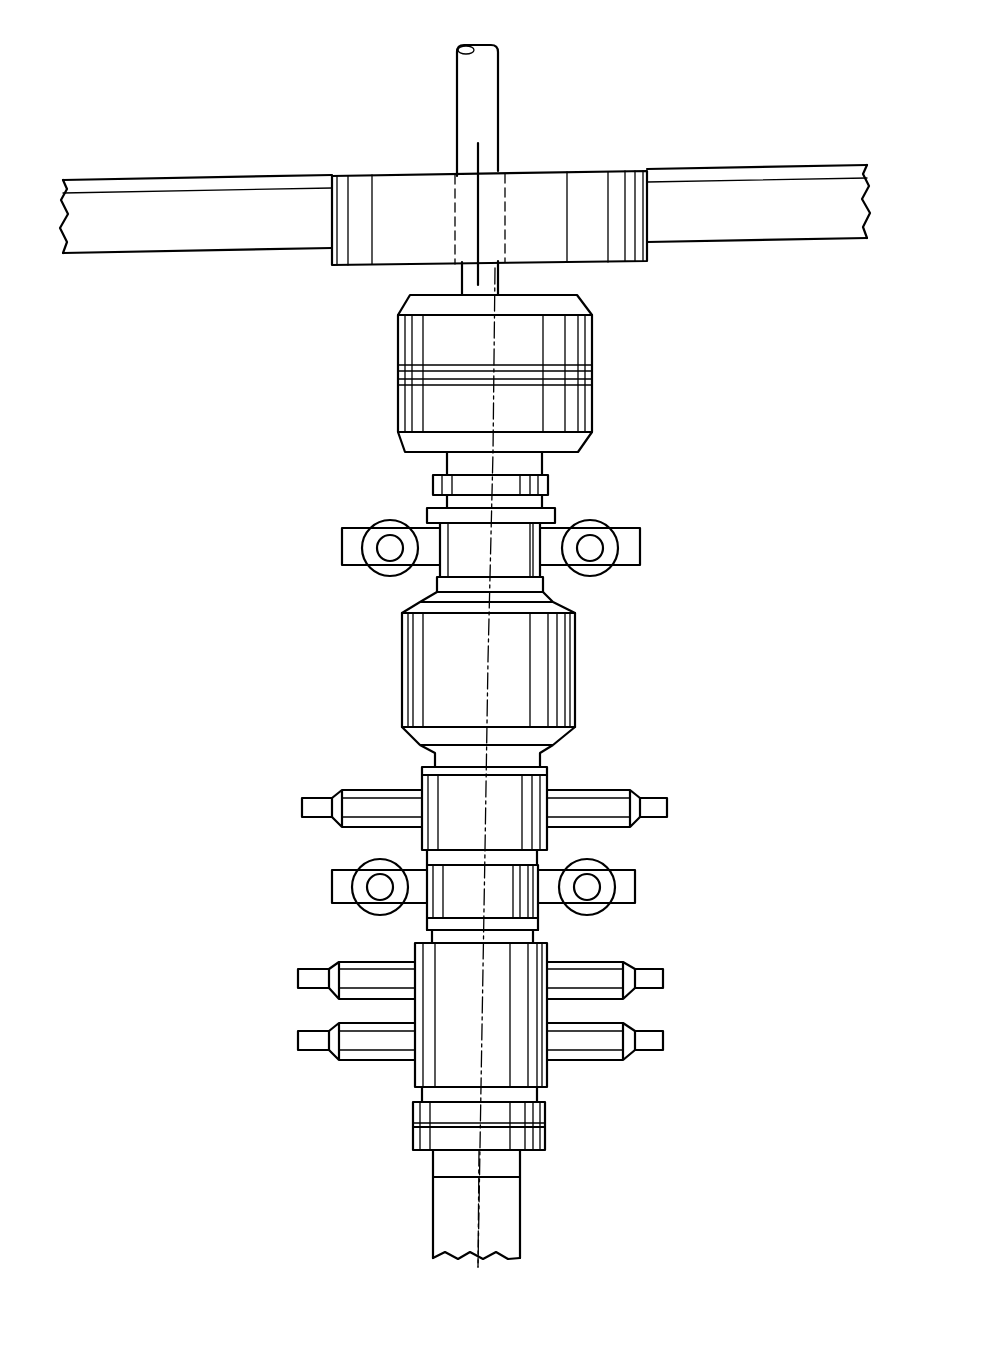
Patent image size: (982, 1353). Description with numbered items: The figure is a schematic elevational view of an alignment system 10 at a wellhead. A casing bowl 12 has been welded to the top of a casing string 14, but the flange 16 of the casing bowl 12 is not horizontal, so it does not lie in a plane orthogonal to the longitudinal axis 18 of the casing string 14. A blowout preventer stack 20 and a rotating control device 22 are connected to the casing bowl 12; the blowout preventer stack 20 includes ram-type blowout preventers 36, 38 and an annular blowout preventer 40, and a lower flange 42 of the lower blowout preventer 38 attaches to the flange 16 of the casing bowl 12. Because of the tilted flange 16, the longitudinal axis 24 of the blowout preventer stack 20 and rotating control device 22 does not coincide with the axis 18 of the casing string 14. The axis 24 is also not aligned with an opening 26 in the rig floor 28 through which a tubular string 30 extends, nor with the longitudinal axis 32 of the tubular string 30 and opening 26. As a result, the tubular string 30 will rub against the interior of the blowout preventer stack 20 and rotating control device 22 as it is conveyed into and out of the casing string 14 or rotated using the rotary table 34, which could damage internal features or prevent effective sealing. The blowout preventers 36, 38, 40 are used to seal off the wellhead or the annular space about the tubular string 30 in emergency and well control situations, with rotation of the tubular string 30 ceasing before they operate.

The alignment system 10 is at (749, 90).
The casing bowl 12 is at (433, 1160).
The casing string 14 is at (523, 1195).
The flange 16 is at (545, 1140).
The longitudinal axis 18 is at (477, 1203).
The blowout preventer stack 20 is at (568, 777).
The rotating control device 22 is at (397, 405).
The longitudinal axis 24 is at (488, 658).
The opening 26 is at (494, 201).
The rig floor 28 is at (203, 176).
The tubular string 30 is at (498, 88).
The longitudinal axis 32 is at (476, 158).
The rotary table 34 is at (613, 168).
The ram-type blowout preventer 36 is at (352, 790).
The ram-type blowout preventer 38 is at (353, 962).
The annular blowout preventer 40 is at (575, 670).
The lower flange 42 is at (413, 1113).